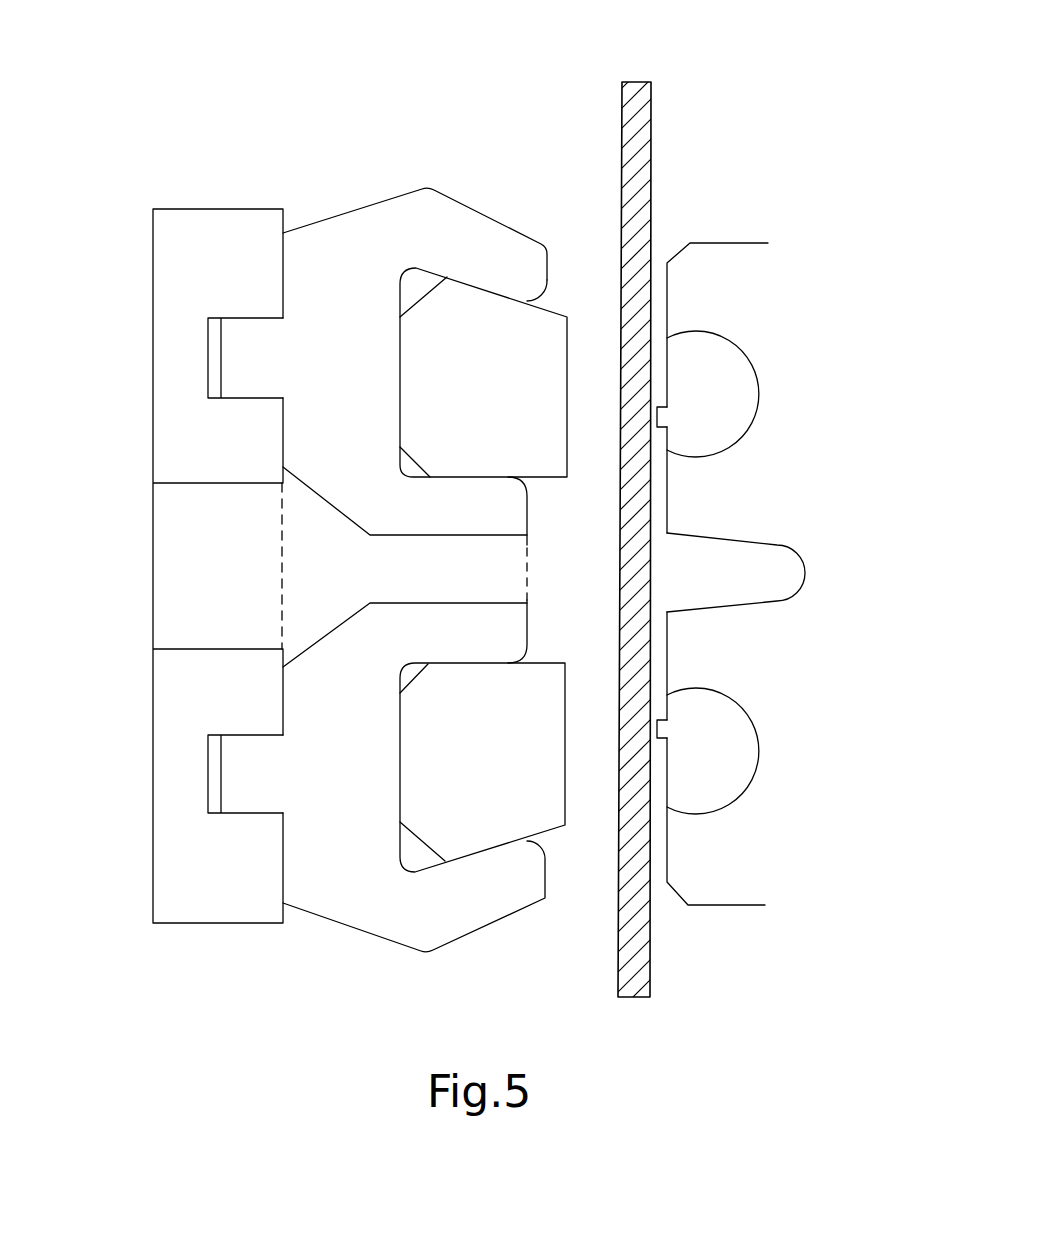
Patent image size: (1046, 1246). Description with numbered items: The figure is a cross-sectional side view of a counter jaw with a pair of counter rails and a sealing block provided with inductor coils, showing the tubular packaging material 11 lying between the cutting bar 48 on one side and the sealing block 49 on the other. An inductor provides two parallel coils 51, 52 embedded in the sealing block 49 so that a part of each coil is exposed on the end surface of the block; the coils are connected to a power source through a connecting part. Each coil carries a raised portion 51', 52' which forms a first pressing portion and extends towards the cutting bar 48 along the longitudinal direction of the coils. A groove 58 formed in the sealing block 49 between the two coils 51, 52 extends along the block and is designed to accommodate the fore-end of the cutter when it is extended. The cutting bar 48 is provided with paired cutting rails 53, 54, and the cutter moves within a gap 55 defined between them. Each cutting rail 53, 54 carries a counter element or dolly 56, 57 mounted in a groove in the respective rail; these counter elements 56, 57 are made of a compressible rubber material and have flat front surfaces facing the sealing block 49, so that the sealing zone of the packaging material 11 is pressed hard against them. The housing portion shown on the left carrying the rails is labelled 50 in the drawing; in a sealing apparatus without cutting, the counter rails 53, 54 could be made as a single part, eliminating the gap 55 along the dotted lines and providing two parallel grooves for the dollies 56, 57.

The tubular packaging material 11 is at (637, 82).
The cutting bar 48 is at (333, 217).
The sealing block 49 is at (728, 242).
The connector housing 50 is at (163, 566).
The inductor coil 51 is at (743, 375).
The raised portion 51' is at (755, 399).
The inductor coil 52 is at (755, 757).
The raised portion 52' is at (750, 707).
The cutting rail 53 is at (402, 252).
The cutting rail 54 is at (372, 898).
The gap 55 is at (455, 567).
The counter element 56 is at (433, 395).
The counter element 57 is at (443, 773).
The groove 58 is at (773, 572).